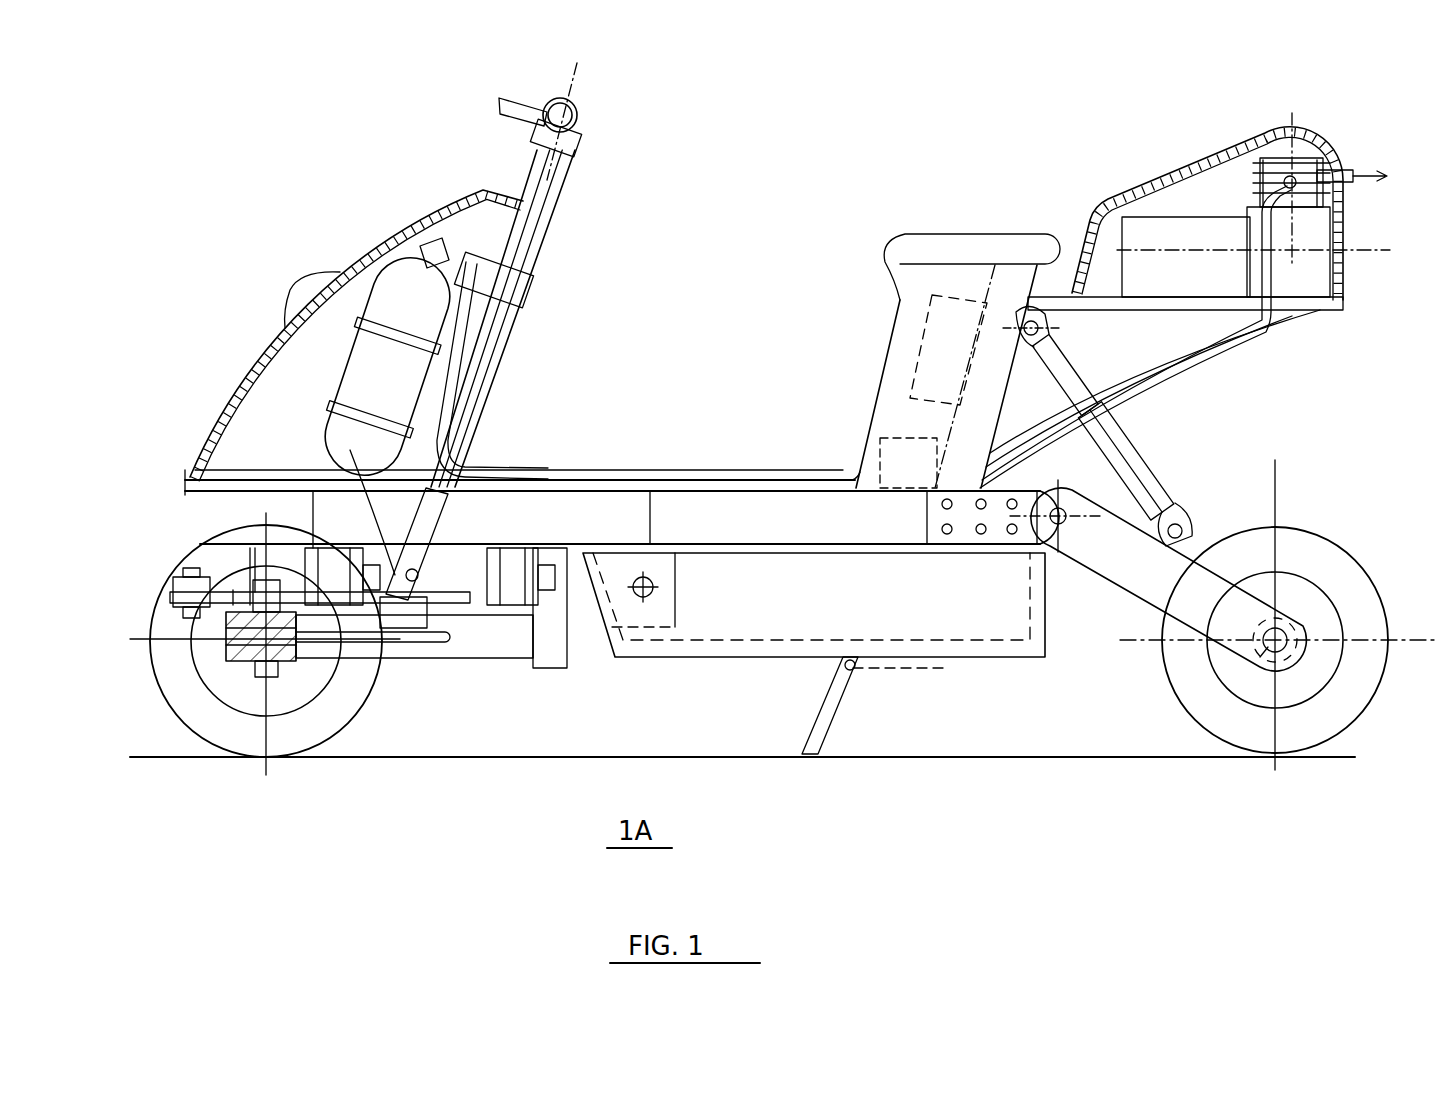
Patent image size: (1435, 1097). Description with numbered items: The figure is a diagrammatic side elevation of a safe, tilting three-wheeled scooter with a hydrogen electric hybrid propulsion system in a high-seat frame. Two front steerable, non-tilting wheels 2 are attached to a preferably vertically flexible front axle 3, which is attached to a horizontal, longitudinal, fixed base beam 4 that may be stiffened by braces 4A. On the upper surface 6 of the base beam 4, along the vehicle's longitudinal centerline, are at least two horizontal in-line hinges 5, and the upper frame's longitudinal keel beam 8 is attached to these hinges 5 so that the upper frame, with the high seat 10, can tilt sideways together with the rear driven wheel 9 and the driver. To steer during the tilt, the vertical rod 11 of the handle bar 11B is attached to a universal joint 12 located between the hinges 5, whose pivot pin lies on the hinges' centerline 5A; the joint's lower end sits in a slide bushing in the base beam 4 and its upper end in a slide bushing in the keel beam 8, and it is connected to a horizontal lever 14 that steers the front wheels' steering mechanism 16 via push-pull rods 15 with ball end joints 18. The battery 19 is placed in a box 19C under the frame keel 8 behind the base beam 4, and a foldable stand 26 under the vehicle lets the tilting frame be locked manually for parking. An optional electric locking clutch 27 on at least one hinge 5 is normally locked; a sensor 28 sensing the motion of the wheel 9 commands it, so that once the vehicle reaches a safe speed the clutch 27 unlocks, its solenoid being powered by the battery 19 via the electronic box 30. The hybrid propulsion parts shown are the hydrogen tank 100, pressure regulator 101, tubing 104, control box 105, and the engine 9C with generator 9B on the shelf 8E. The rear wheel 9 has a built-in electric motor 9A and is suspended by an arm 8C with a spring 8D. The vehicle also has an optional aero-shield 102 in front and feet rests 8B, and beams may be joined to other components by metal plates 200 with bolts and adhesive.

The front steerable, non-tilting wheels 2 is at (187, 553).
The front axle 3 is at (262, 615).
The base beam 4 is at (452, 650).
The braces 4A is at (375, 640).
The hinges 5 is at (333, 565).
The hinges' centerline 5A is at (290, 593).
The upper surface 6 is at (483, 560).
The keel beam 8 is at (752, 514).
The feet rests 8B is at (658, 570).
The arm 8C is at (1128, 590).
The spring 8D is at (1140, 447).
The shelf 8E is at (1317, 310).
The rear driven wheel 9 is at (1303, 522).
The electric motor 9A is at (1323, 587).
The generator 9B is at (1164, 215).
The engine 9C is at (1303, 130).
The high seat 10 is at (947, 232).
The vertical rod 11 is at (500, 371).
The handle bar 11B is at (583, 122).
The universal joint 12 is at (478, 615).
The horizontal lever 14 is at (362, 500).
The push-pull rods 15 is at (257, 590).
The steering mechanism 16 is at (233, 593).
The ball end joints 18 is at (192, 470).
The battery 19 is at (897, 612).
The box 19C is at (920, 300).
The foldable stand 26 is at (813, 703).
The electric locking clutch 27 is at (603, 488).
The sensor 28 is at (1260, 657).
The electronic box 30 is at (652, 632).
The hydrogen tank 100 is at (399, 290).
The pressure regulator 101 is at (431, 238).
The aero-shield 102 is at (250, 348).
The tubing 104 is at (818, 478).
The control box 105 is at (893, 435).
The metal plates 200 is at (925, 516).